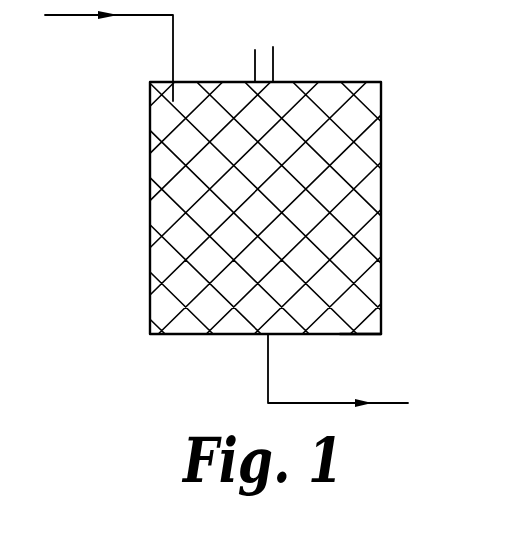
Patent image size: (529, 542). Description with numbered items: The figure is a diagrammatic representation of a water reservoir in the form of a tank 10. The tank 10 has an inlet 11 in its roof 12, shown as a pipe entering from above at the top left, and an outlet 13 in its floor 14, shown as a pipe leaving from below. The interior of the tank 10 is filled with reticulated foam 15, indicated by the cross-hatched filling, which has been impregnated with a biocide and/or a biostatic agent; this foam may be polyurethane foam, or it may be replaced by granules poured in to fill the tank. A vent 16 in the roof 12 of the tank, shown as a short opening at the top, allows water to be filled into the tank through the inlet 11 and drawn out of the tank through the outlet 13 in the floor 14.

The tank 10 is at (304, 189).
The inlet 11 is at (175, 60).
The roof 12 is at (317, 82).
The outlet 13 is at (267, 335).
The floor 14 is at (363, 334).
The reticulated foam 15 is at (307, 158).
The vent 16 is at (265, 62).